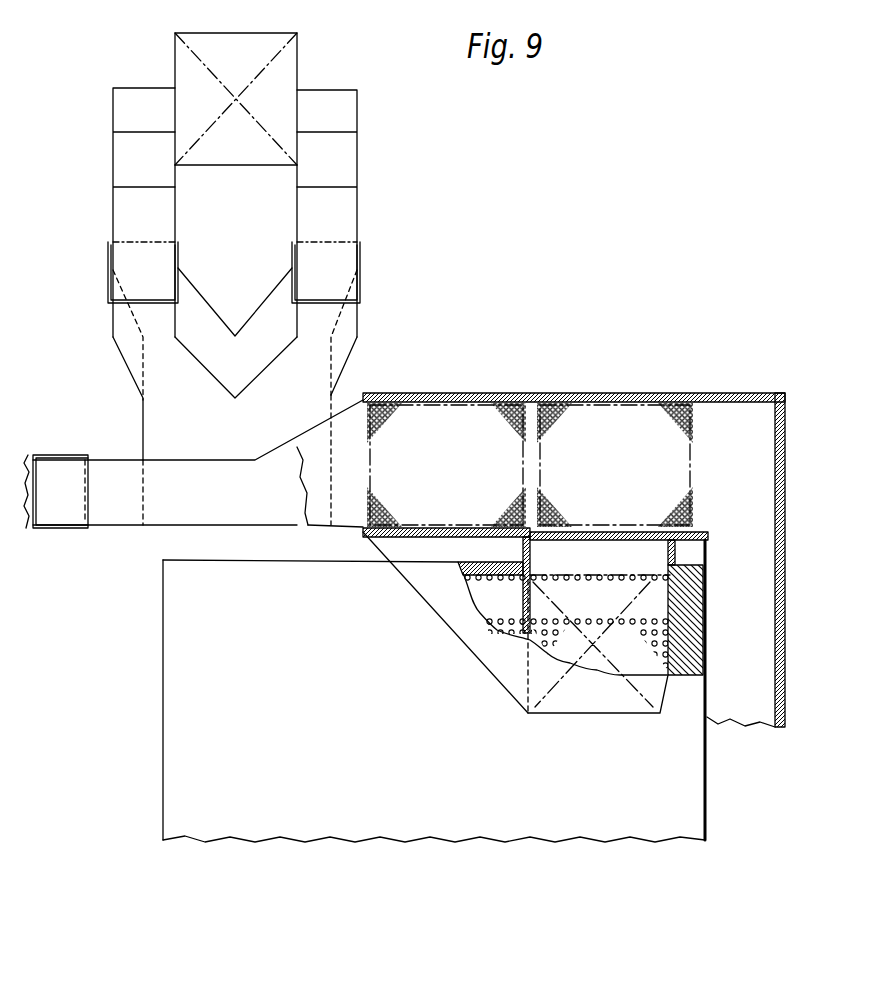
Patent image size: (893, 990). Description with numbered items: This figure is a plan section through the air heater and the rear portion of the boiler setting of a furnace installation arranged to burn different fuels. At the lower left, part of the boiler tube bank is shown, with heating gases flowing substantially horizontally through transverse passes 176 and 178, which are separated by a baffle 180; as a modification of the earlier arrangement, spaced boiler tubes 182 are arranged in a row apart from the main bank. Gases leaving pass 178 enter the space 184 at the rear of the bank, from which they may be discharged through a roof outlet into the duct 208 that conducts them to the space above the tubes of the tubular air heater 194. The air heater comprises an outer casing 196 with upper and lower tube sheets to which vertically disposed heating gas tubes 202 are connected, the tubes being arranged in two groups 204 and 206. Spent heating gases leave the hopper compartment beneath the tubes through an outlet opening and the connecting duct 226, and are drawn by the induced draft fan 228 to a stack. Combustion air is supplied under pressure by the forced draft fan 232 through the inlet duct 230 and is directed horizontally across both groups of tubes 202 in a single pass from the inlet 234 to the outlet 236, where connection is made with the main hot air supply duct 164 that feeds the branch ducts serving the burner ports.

The main hot air supply duct 164 is at (775, 698).
The boiler pass 176 is at (510, 619).
The boiler pass 178 is at (568, 643).
The baffle 180 is at (524, 585).
The spaced boiler tubes 182 is at (570, 576).
The space at the rear of the bank 184 is at (613, 609).
The tubular air heater 194 is at (437, 425).
The outer casing 196 is at (601, 539).
The heating gas tubes 202 is at (386, 518).
The group of tubes 204 is at (690, 440).
The group of tubes 206 is at (523, 432).
The duct 208 is at (578, 715).
The connecting duct 226 is at (142, 413).
The induced draft fan 228 is at (300, 68).
The inlet duct 230 is at (198, 527).
The forced draft fan 232 is at (68, 524).
The inlet 234 is at (365, 479).
The outlet 236 is at (745, 484).